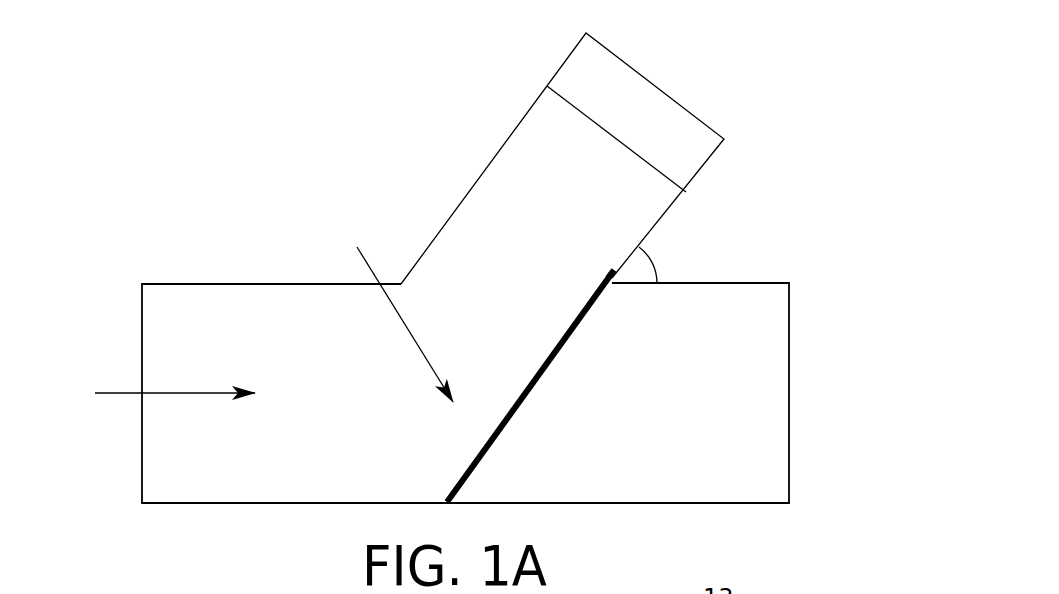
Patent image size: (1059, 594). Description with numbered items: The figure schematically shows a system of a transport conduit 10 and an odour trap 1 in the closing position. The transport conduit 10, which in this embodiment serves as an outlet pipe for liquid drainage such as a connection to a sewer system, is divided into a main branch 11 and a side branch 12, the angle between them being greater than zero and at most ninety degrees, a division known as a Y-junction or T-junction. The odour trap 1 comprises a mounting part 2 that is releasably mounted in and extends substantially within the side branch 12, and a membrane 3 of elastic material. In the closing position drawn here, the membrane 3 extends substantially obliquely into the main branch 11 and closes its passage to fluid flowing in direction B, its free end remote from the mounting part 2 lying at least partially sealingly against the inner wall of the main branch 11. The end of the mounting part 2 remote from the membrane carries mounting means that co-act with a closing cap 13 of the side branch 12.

The odour trap 1 is at (399, 310).
The mounting part 2 is at (610, 273).
The membrane 3 is at (535, 388).
The transport conduit 10 is at (130, 215).
The main branch 11 is at (607, 503).
The side branch 12 is at (500, 178).
The closing cap 13 is at (645, 105).
The flow direction B is at (117, 393).